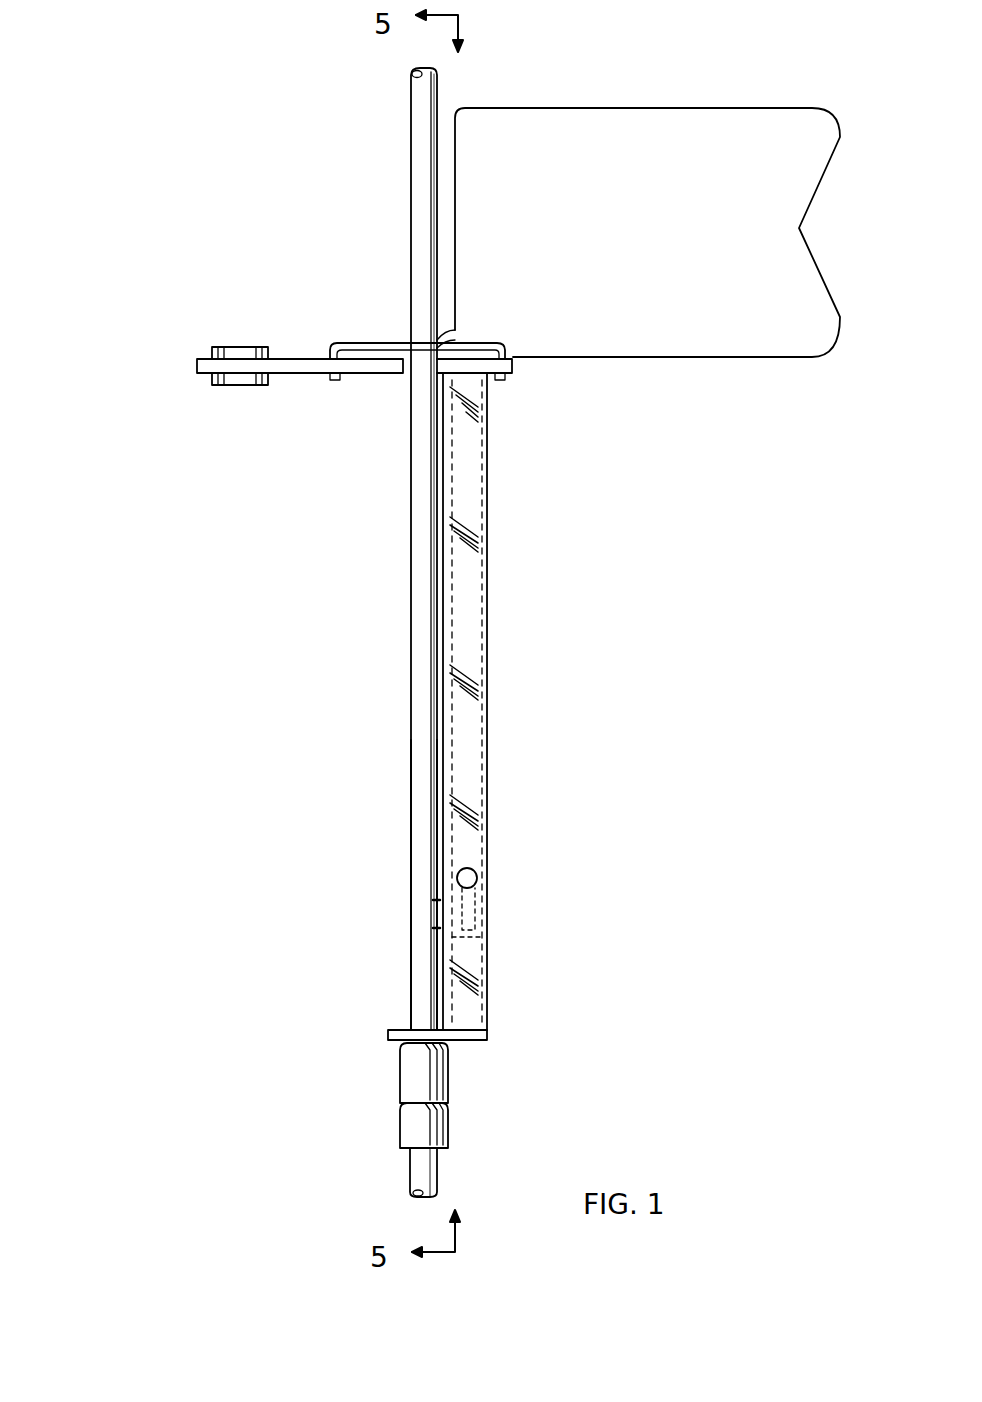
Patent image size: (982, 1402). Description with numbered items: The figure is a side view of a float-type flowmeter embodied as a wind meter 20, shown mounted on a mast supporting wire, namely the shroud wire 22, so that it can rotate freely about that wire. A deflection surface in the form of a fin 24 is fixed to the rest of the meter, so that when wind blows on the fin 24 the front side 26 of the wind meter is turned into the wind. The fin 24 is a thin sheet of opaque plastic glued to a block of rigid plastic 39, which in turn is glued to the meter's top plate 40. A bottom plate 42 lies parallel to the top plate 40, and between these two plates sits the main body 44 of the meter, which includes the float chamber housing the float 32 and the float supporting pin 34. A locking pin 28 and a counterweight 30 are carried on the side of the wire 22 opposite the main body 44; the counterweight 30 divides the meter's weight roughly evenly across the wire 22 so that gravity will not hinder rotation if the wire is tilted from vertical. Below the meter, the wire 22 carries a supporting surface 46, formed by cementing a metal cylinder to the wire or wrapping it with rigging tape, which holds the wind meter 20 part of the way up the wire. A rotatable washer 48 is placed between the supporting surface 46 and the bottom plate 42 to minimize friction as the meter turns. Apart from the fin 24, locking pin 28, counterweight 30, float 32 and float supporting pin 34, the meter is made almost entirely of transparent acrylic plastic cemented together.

The wind meter 20 is at (168, 773).
The shroud wire 22 is at (410, 178).
The fin 24 is at (733, 108).
The front side 26 is at (433, 750).
The locking pin 28 is at (336, 343).
The counterweight 30 is at (215, 384).
The float 32 is at (470, 870).
The float supporting pin 34 is at (470, 905).
The block of rigid plastic 39 is at (445, 345).
The top plate 40 is at (316, 374).
The bottom plate 42 is at (488, 1035).
The main body 44 is at (500, 613).
The supporting surface 46 is at (400, 1115).
The rotatable washer 48 is at (400, 1067).